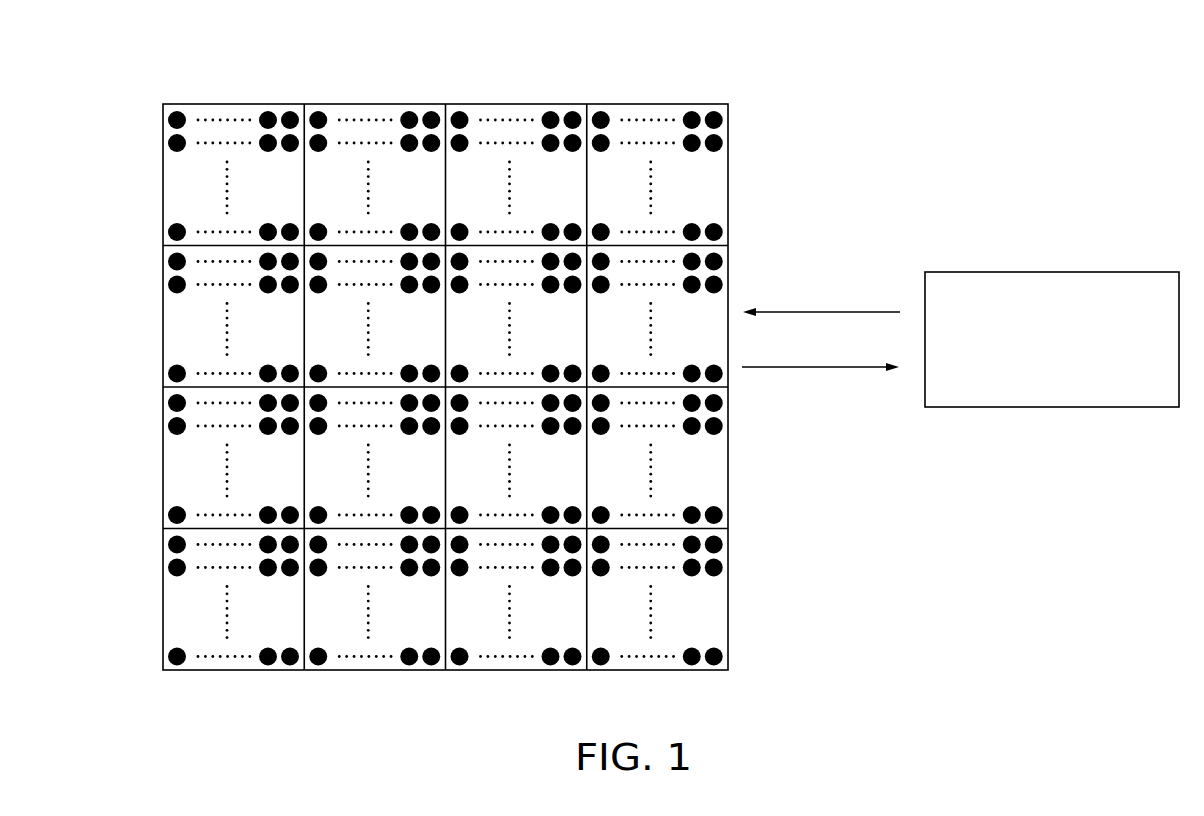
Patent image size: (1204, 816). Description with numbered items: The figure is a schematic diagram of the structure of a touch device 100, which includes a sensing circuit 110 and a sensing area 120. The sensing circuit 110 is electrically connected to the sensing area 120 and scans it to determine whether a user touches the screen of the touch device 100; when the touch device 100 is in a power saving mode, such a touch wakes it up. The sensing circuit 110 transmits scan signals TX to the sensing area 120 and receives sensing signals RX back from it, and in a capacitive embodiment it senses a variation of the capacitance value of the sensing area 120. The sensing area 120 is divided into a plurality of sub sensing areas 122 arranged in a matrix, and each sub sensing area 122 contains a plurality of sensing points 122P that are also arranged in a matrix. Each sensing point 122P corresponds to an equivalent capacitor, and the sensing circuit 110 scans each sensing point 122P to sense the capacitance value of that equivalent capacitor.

The touch device 100 is at (77, 62).
The sensing circuit 110 is at (1073, 368).
The sensing area 120 is at (749, 97).
The sub sensing area 122 is at (232, 105).
The sensing point 122P is at (722, 117).